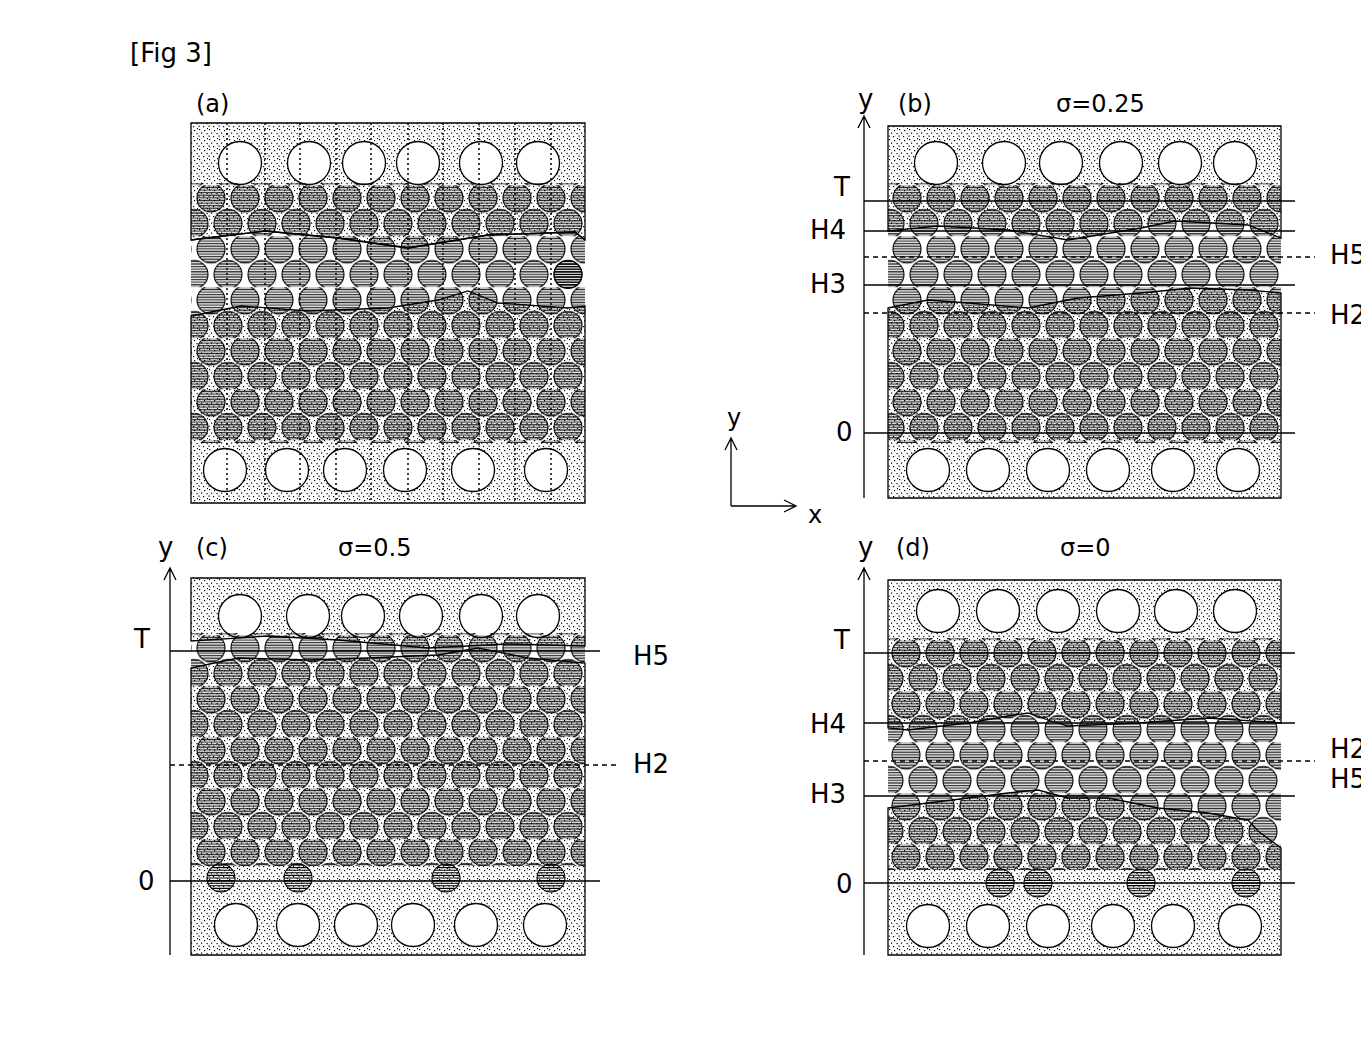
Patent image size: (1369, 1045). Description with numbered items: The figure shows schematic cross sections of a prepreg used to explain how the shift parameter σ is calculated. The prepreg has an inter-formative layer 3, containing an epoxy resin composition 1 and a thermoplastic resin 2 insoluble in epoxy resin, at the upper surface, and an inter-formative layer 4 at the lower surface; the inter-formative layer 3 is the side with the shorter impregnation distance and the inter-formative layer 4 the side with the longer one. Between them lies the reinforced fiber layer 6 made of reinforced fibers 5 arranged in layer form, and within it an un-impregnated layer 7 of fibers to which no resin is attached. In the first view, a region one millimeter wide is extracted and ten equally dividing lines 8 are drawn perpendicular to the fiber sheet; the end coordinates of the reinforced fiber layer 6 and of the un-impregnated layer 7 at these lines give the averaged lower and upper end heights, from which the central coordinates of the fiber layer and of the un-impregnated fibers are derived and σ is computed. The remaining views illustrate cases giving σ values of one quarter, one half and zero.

The epoxy resin composition 1 is at (558, 132).
The thermoplastic resin 2 is at (532, 150).
The inter-formative layer 3 is at (183, 116).
The inter-formative layer 4 is at (183, 431).
The reinforced fibers 5 is at (568, 256).
The reinforced fiber layer 6 is at (585, 177).
The un-impregnated layer 7 is at (183, 233).
The equally dividing lines 8 is at (552, 468).